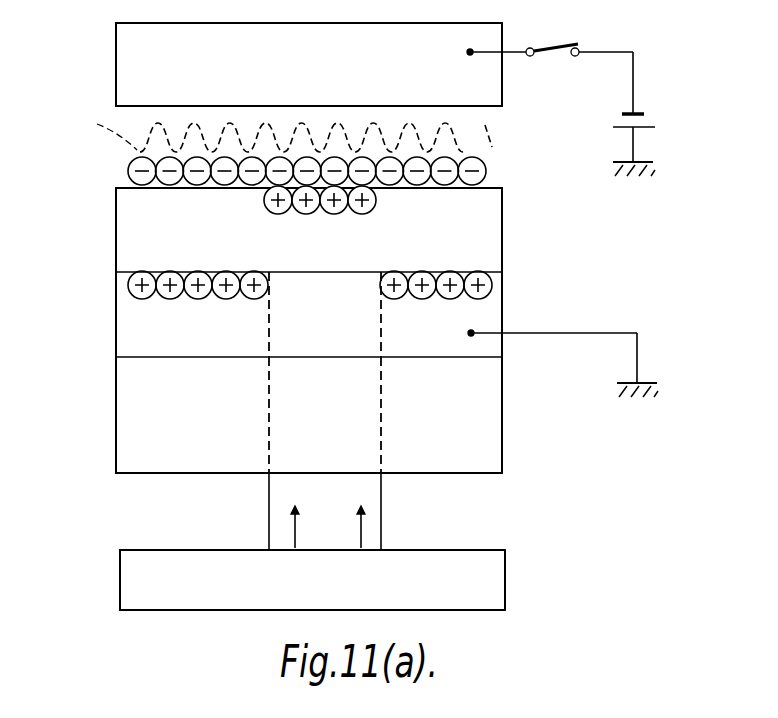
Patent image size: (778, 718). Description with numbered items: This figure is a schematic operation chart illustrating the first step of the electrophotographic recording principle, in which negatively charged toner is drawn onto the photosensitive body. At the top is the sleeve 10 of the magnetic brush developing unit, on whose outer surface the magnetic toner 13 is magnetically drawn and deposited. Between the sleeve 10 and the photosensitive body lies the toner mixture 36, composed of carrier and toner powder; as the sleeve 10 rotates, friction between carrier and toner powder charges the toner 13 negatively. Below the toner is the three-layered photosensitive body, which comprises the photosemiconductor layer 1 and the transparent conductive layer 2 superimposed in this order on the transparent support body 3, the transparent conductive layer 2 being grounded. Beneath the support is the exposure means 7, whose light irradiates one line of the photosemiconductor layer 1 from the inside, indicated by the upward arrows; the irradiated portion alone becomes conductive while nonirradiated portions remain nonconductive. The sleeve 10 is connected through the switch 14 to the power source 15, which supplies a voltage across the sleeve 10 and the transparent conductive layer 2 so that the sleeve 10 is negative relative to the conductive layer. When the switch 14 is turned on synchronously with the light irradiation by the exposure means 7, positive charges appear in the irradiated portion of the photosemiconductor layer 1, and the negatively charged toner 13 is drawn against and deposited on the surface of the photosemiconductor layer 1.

The sleeve 10 is at (122, 62).
The magnetic toner 13 is at (118, 172).
The toner mixture 36 is at (282, 131).
The photosemiconductor layer 1 is at (126, 223).
The transparent conductive layer 2 is at (126, 319).
The transparent support body 3 is at (126, 410).
The exposure means 7 is at (130, 580).
The switch 14 is at (559, 57).
The power source 15 is at (645, 122).